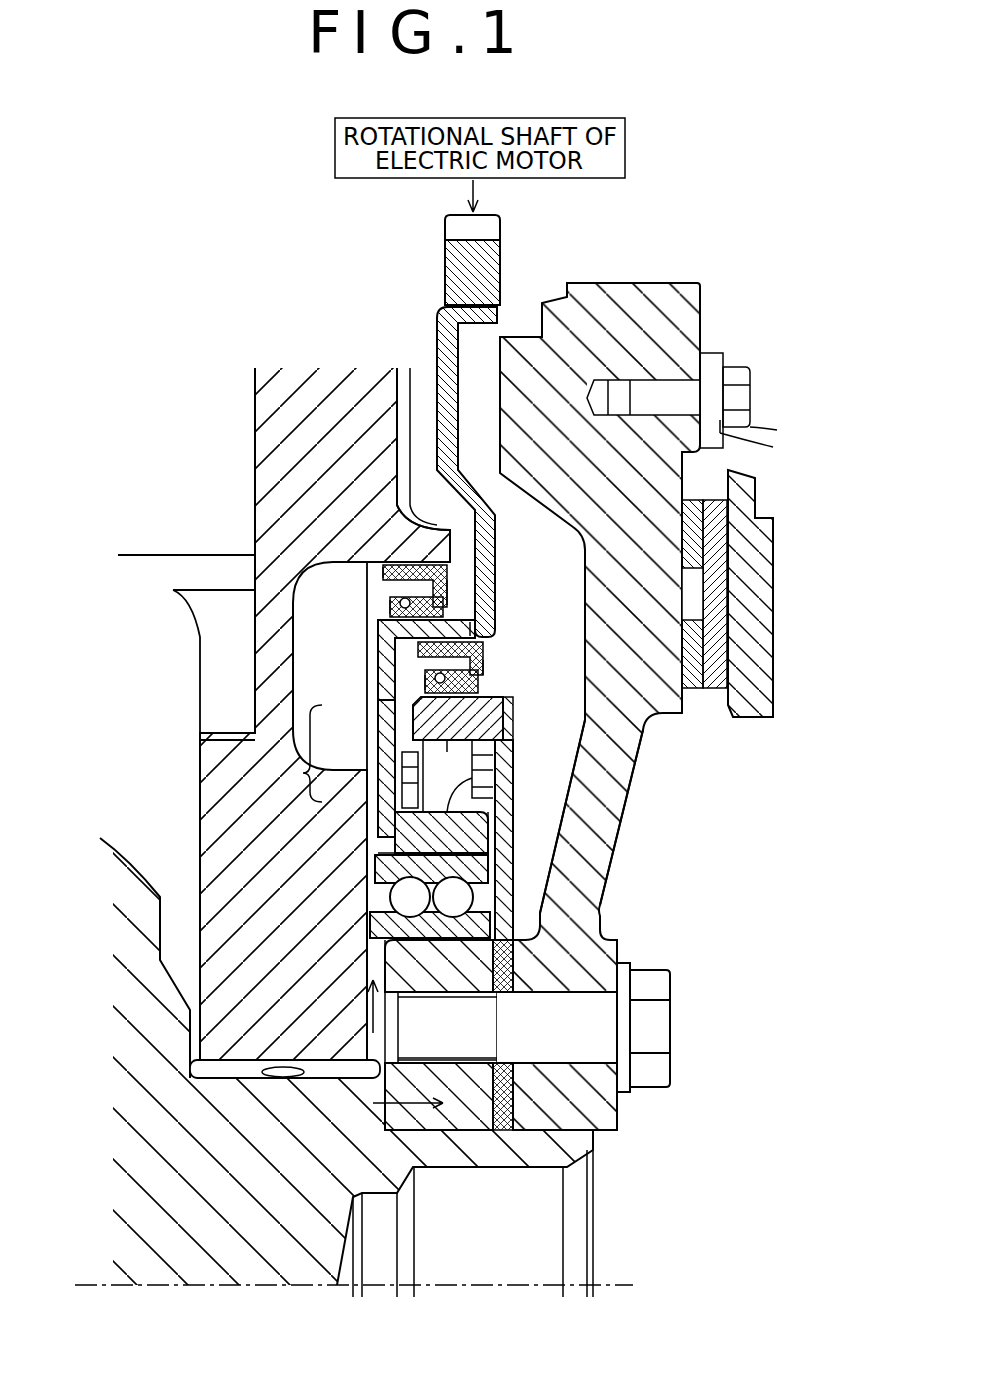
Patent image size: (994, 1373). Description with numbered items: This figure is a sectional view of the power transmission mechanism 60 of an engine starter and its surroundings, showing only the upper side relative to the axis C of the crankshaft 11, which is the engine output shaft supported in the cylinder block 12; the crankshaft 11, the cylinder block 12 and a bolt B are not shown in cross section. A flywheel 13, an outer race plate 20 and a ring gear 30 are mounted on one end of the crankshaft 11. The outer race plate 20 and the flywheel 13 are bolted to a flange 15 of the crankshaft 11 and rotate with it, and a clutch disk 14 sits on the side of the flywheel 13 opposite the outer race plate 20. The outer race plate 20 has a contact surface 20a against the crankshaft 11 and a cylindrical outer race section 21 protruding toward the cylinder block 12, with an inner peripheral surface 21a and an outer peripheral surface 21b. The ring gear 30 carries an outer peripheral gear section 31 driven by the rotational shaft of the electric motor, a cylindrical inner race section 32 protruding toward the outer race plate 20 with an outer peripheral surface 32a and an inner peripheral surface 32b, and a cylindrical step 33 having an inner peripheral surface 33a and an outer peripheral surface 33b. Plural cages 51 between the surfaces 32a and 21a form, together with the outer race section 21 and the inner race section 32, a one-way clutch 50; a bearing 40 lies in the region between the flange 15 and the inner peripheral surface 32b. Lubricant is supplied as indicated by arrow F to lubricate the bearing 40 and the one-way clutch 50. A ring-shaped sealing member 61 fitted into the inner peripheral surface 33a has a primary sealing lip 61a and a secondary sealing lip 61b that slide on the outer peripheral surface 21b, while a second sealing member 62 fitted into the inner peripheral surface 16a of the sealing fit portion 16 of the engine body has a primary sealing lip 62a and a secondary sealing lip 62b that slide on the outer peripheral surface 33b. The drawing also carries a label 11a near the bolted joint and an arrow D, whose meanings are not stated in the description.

The crankshaft 11 is at (120, 1140).
The fitting portion of front housing 11a is at (510, 968).
The cylinder block 12 is at (258, 413).
The flywheel 13 is at (622, 790).
The clutch disk 14 is at (697, 692).
The flange 15 is at (376, 957).
The sealing fit portion 16 is at (378, 490).
The inner peripheral surface 16a is at (397, 585).
The outer race plate 20 is at (516, 776).
The contact surface 20a is at (497, 1027).
The outer race section 21 is at (413, 722).
The inner peripheral surface 21a is at (458, 727).
The outer peripheral surface 21b is at (504, 716).
The ring gear 30 is at (496, 549).
The gear section 31 is at (445, 275).
The inner race section 32 is at (420, 830).
The outer peripheral surface 32a is at (503, 767).
The inner peripheral surface 32b is at (400, 856).
The step 33 is at (492, 642).
The inner peripheral surface 33a is at (390, 647).
The outer peripheral surface 33b is at (482, 624).
The bearing 40 is at (475, 900).
The one-way clutch 50 is at (310, 774).
The cages 51 is at (425, 750).
The power transmission mechanism 60 is at (581, 598).
The sealing member 61 is at (485, 662).
The primary sealing lip 61a is at (410, 677).
The secondary sealing lip 61b is at (480, 686).
The sealing member 62 is at (455, 563).
The primary sealing lip 62a is at (392, 607).
The secondary sealing lip 62b is at (447, 586).
The bolt B is at (675, 1027).
The axis C is at (612, 1285).
The direction D is at (408, 1124).
The arrow F is at (368, 1003).